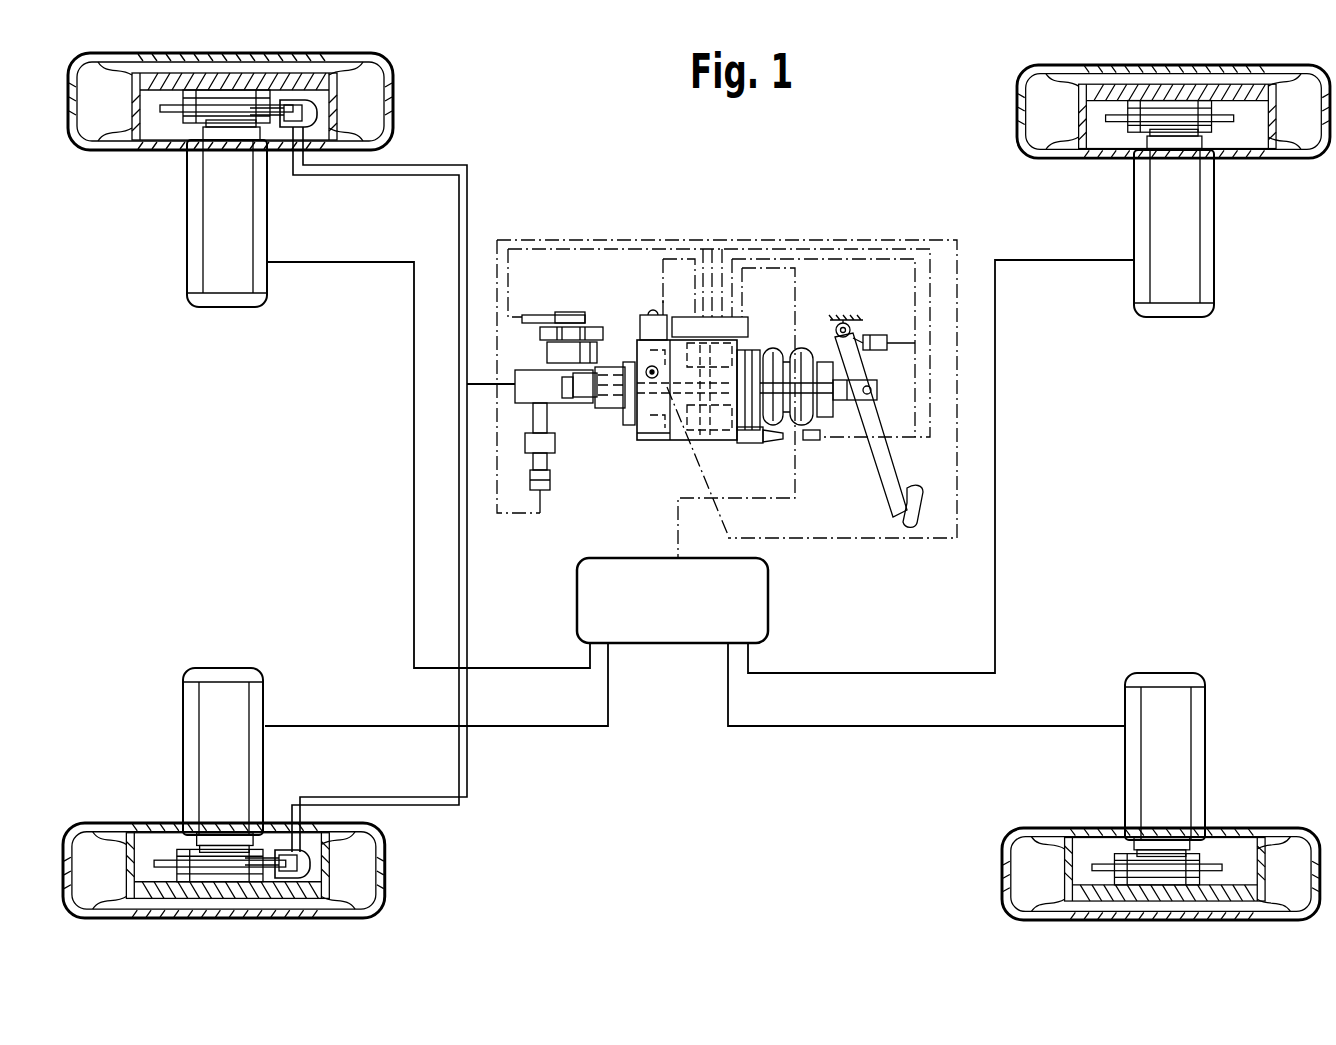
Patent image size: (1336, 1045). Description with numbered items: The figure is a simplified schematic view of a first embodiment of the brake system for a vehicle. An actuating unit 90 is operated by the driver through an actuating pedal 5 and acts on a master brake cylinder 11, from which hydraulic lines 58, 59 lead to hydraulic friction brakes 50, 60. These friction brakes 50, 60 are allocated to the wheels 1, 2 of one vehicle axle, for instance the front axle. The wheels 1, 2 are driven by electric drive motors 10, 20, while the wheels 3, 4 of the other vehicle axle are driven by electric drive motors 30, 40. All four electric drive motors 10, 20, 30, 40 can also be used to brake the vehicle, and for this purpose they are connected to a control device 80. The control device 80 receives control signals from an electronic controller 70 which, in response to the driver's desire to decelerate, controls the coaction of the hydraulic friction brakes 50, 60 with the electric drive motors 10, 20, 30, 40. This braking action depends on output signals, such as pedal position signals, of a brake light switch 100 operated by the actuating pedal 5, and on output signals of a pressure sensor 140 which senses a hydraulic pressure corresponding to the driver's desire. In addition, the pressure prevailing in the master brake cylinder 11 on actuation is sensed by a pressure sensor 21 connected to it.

The wheel 1 is at (122, 151).
The wheel 2 is at (109, 823).
The wheel 3 is at (1287, 160).
The wheel 4 is at (1274, 828).
The actuating pedal 5 is at (880, 483).
The electric drive motor 10 is at (187, 268).
The electric drive motor 20 is at (183, 712).
The electric drive motor 30 is at (1215, 281).
The electric drive motor 40 is at (1205, 727).
The hydraulic friction brake 50 is at (290, 128).
The hydraulic friction brake 60 is at (284, 850).
The hydraulic line 58 is at (470, 190).
The hydraulic line 59 is at (468, 572).
The electronic controller 70 is at (748, 331).
The control device 80 is at (683, 650).
The actuating unit 90 is at (684, 298).
The brake light switch 100 is at (878, 335).
The master brake cylinder 11 is at (524, 315).
The pressure sensor 21 is at (555, 450).
The pressure sensor 140 is at (627, 348).